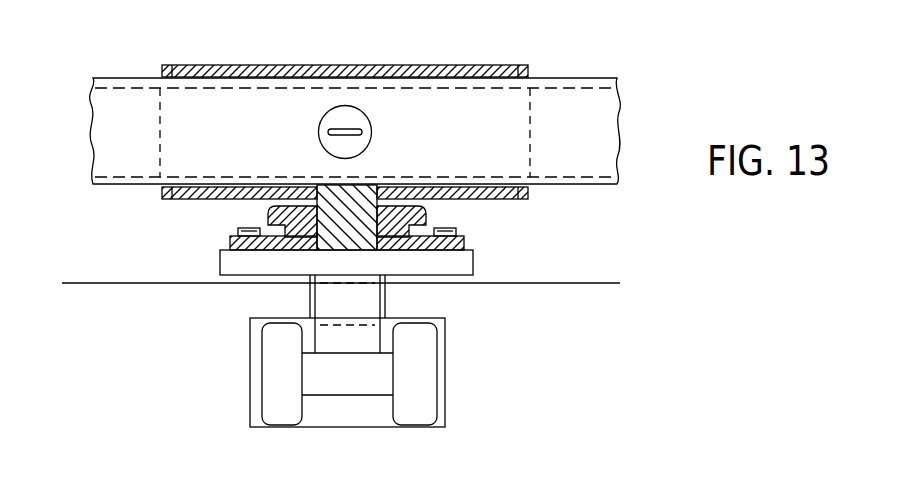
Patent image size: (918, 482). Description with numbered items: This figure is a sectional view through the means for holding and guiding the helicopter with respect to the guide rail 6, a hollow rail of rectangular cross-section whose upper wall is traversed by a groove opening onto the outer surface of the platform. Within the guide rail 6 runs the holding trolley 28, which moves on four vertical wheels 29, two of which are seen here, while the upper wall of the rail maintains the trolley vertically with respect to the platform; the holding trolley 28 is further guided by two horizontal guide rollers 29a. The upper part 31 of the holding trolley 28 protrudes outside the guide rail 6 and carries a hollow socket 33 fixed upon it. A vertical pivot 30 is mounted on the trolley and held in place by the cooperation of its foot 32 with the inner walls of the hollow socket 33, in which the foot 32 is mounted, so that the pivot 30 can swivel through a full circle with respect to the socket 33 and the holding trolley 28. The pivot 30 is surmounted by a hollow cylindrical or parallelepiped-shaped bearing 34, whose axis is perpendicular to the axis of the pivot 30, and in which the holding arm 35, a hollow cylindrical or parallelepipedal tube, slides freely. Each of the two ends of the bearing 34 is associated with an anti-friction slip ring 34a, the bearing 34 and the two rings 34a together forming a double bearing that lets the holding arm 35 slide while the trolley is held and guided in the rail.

The holding arm 35 is at (137, 81).
The bearing 34 is at (250, 66).
The anti-friction slip ring 34a is at (166, 189).
The vertical pivot 30 is at (331, 197).
The hollow socket 33 is at (393, 206).
The foot 32 is at (401, 246).
The upper part 31 is at (463, 263).
The horizontal guide roller 29a is at (316, 294).
The holding trolley 28 is at (262, 352).
The vertical wheel 29 is at (278, 389).
The guide rail 6 is at (445, 350).